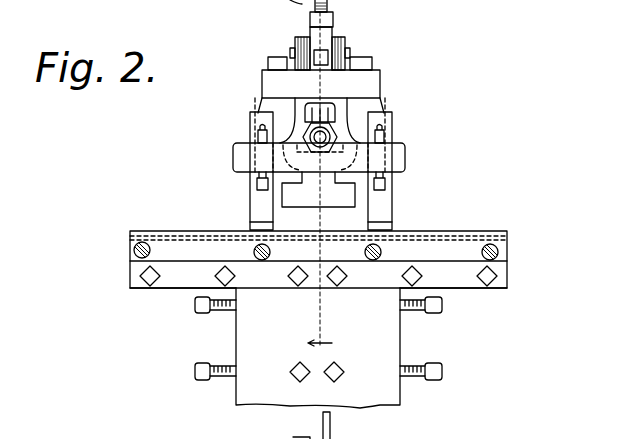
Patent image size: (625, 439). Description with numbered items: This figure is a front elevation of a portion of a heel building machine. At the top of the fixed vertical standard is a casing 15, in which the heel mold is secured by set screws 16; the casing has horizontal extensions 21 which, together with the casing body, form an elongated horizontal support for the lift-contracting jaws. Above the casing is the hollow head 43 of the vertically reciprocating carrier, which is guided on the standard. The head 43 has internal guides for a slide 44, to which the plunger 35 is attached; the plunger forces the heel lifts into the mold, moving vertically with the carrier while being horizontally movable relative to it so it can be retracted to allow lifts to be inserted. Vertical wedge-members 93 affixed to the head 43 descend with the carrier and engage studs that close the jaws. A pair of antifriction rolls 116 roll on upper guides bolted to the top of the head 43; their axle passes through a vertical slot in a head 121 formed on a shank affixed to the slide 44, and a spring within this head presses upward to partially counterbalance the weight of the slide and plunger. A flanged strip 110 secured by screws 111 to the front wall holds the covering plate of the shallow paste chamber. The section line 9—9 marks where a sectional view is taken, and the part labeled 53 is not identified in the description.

The section line 9— 9 is at (317, 381).
The casing 15 is at (344, 348).
The set screws 16 is at (199, 307).
The horizontal extensions 21 is at (139, 283).
The plunger 35 is at (310, 194).
The hollow head 43 is at (376, 107).
The slide 44 is at (385, 438).
The cross bar 53 is at (405, 157).
The vertical wedge-members 93 is at (251, 207).
The flanged strip 110 is at (318, 262).
The screws 111 is at (133, 249).
The antifriction rolls 116 is at (296, 45).
The head 121 is at (327, 35).